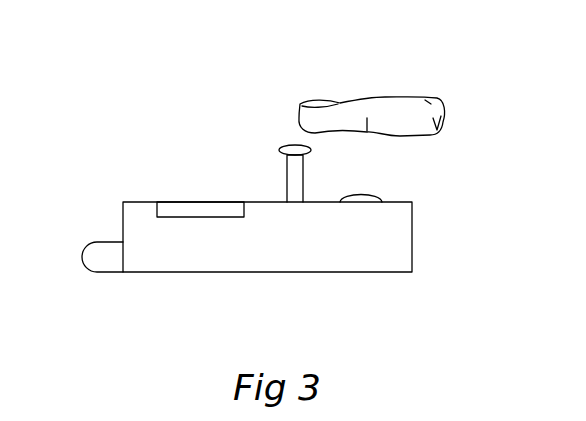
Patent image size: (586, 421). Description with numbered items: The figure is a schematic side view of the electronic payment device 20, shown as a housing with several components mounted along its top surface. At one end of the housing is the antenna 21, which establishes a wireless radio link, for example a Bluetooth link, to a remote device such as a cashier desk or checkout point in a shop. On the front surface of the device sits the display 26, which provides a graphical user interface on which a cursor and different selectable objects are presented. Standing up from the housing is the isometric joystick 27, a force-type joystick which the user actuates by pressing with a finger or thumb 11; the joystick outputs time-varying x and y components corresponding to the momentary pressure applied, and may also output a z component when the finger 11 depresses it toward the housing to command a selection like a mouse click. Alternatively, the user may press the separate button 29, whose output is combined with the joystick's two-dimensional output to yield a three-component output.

The finger 11 is at (391, 108).
The electronic payment device 20 is at (137, 215).
The antenna 21 is at (104, 255).
The display 26 is at (213, 205).
The joystick 27 is at (293, 148).
The separate button 29 is at (362, 198).